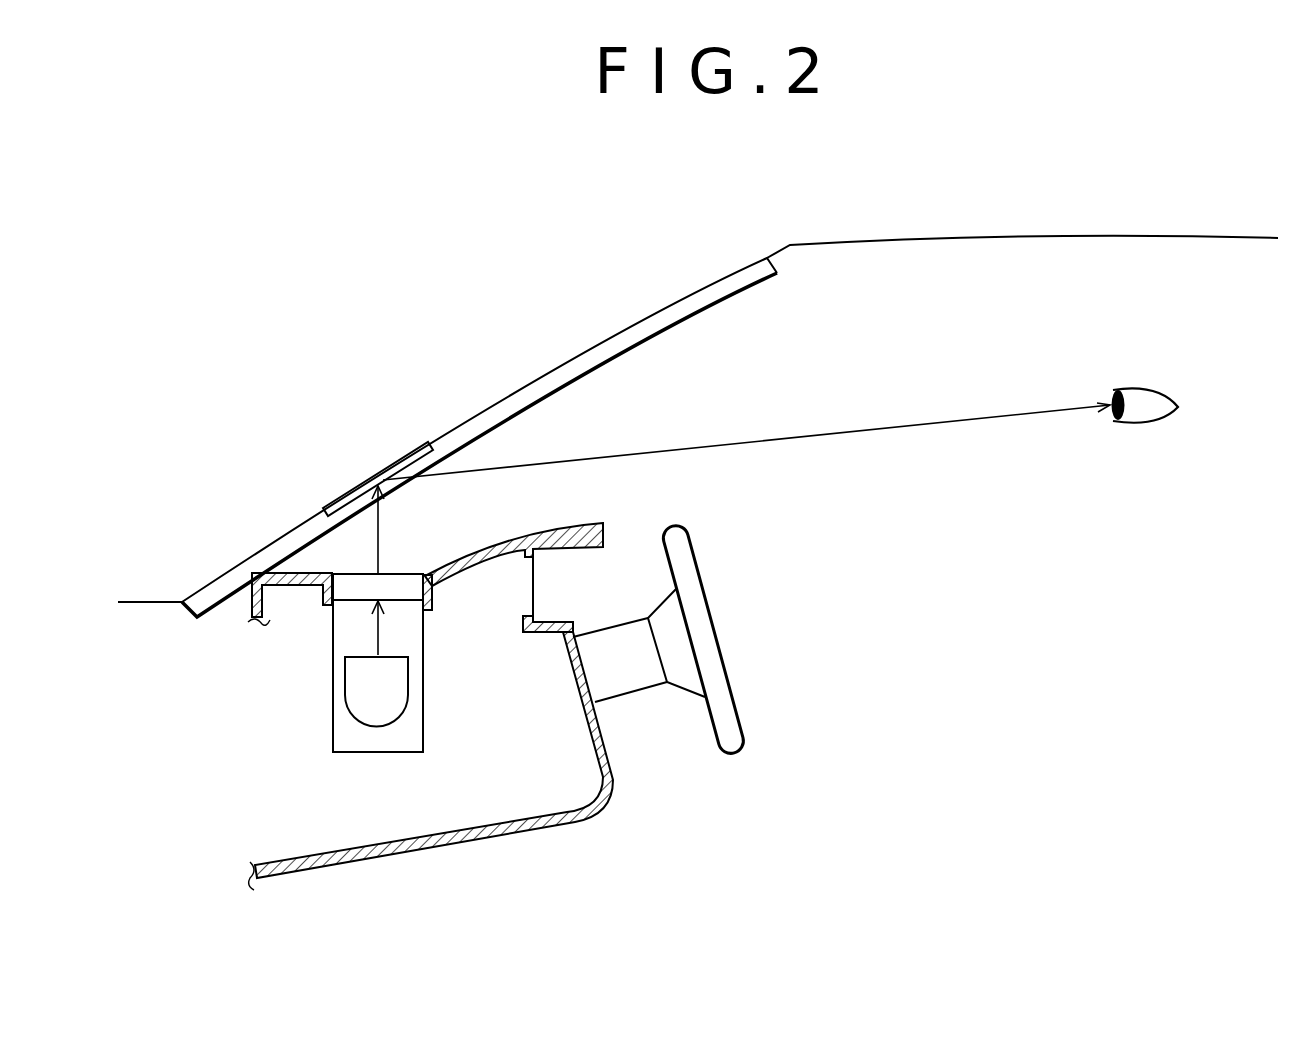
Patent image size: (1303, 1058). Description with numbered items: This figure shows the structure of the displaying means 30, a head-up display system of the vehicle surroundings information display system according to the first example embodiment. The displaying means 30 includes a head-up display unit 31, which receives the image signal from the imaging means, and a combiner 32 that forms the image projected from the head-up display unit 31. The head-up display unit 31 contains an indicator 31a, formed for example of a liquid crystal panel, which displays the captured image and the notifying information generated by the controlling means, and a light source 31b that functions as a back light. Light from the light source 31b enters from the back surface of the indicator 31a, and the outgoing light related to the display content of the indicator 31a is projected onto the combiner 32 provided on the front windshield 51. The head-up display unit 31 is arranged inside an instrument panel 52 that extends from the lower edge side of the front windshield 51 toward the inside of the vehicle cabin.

The displaying means 30 is at (280, 330).
The head-up display unit 31 is at (297, 663).
The indicator 31a is at (357, 602).
The light source 31b is at (345, 690).
The combiner 32 is at (402, 452).
The front windshield 51 is at (667, 300).
The instrument panel 52 is at (547, 827).